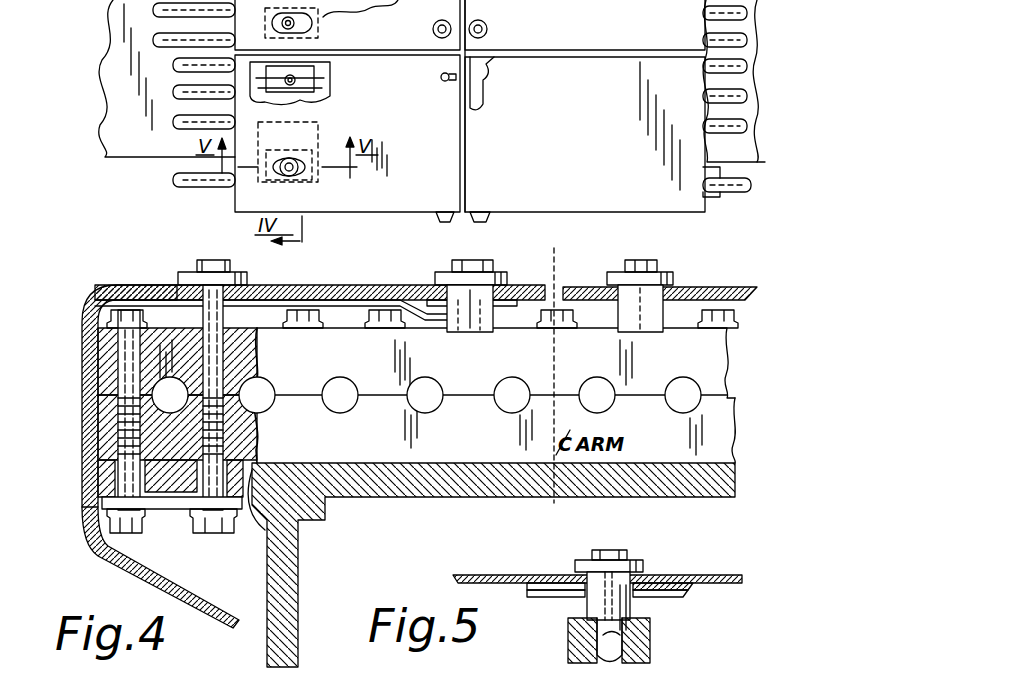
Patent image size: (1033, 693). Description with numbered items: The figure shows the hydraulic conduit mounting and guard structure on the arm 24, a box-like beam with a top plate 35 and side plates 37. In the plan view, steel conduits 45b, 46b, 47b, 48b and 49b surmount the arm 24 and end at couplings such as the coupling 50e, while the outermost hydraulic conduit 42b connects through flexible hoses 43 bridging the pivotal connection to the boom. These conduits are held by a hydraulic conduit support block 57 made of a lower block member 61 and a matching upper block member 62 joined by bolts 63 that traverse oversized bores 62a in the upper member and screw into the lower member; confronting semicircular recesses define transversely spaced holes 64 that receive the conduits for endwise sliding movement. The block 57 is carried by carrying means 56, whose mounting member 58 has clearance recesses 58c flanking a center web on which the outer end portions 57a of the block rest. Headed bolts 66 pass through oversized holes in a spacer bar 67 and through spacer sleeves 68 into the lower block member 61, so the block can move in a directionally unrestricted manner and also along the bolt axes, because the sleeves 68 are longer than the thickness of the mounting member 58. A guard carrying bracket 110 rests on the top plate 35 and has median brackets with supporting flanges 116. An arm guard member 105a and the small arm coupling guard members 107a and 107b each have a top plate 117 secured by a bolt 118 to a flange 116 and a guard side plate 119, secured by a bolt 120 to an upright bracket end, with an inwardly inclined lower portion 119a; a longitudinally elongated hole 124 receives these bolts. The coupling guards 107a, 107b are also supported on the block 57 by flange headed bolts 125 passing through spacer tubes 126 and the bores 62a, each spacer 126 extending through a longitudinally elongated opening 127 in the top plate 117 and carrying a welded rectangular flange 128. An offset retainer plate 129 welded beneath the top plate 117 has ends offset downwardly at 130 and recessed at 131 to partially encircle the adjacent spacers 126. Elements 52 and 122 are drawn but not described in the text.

In FIG. 3, the arm 24 is at (118, 160).
In FIG. 4, the arm 24 is at (735, 475).
In FIG. 4, the top plate 35 is at (670, 498).
In FIG. 4, the side plates 37 is at (300, 572).
In FIG. 3, the outermost hydraulic conduit 42b is at (752, 185).
In FIG. 3, the flexible hoses 43 is at (172, 185).
In FIG. 3, the conduit 45b is at (748, 126).
In FIG. 3, the conduit 46b is at (748, 96).
In FIG. 3, the conduit 47b is at (748, 66).
In FIG. 3, the conduit 48b is at (748, 40).
In FIG. 3, the conduit 49b is at (748, 13).
In FIG. 3, the coupling 50e is at (400, 5).
In FIG. 4, the bottom plate assembly 52 is at (186, 533).
In FIG. 4, the carrying means 56 is at (168, 510).
In FIG. 4, the hydraulic conduit support block 57 is at (738, 357).
In FIG. 4, the end portions 57a is at (98, 420).
In FIG. 4, the mounting member 58 is at (192, 455).
In FIG. 4, the clearance recesses 58c is at (107, 473).
In FIG. 4, the lower block member 61 is at (735, 432).
In FIG. 4, the upper block member 62 is at (730, 398).
In FIG. 5, the upper block member 62 is at (652, 625).
In FIG. 4, the oversized bores 62a is at (225, 358).
In FIG. 5, the oversized bores 62a is at (615, 640).
In FIG. 4, the bolts 63 is at (105, 312).
In FIG. 4, the holes 64 is at (168, 378).
In FIG. 4, the headed bolts 66 is at (127, 534).
In FIG. 4, the spacer bar 67 is at (92, 513).
In FIG. 4, the spacer sleeves 68 is at (243, 468).
In FIG. 3, the arm guard member 105a is at (640, 200).
In FIG. 3, the small arm coupling guard member 107a is at (348, 212).
In FIG. 4, the small arm coupling guard member 107a is at (120, 285).
In FIG. 5, the small arm coupling guard member 107a is at (480, 575).
In FIG. 4, the small arm coupling guard member 107b is at (688, 287).
In FIG. 3, the guard carrying bracket 110 is at (505, 72).
In FIG. 3, the supporting flanges 116 is at (490, 60).
In FIG. 3, the top plate 117 is at (430, 158).
In FIG. 4, the top plate 117 is at (310, 286).
In FIG. 5, the top plate 117 is at (512, 576).
In FIG. 3, the bolt 118 is at (435, 98).
In FIG. 4, the guard side plate 119 is at (82, 345).
In FIG. 4, the inwardly inclined lower portion 119a is at (205, 618).
In FIG. 3, the bolt 120 is at (445, 211).
In FIG. 3, the bolt 122 is at (482, 222).
In FIG. 3, the longitudinally elongated hole 124 is at (440, 80).
In FIG. 4, the flange headed bolts 125 is at (222, 243).
In FIG. 5, the flange headed bolts 125 is at (608, 550).
In FIG. 4, the spacer tubes 126 is at (178, 290).
In FIG. 5, the spacer tubes 126 is at (667, 598).
In FIG. 4, the longitudinally elongated opening 127 is at (425, 278).
In FIG. 5, the longitudinally elongated opening 127 is at (655, 582).
In FIG. 3, the rectangular flange 128 is at (322, 76).
In FIG. 4, the rectangular flange 128 is at (252, 300).
In FIG. 5, the rectangular flange 128 is at (570, 583).
In FIG. 3, the offset retainer plate 129 is at (262, 120).
In FIG. 5, the offset retainer plate 129 is at (525, 600).
In FIG. 3, the downwardly offset ends 130 is at (330, 100).
In FIG. 4, the downwardly offset ends 130 is at (430, 318).
In FIG. 5, the downwardly offset ends 130 is at (527, 597).
In FIG. 4, the recesses 131 is at (450, 318).
In FIG. 5, the recesses 131 is at (578, 594).